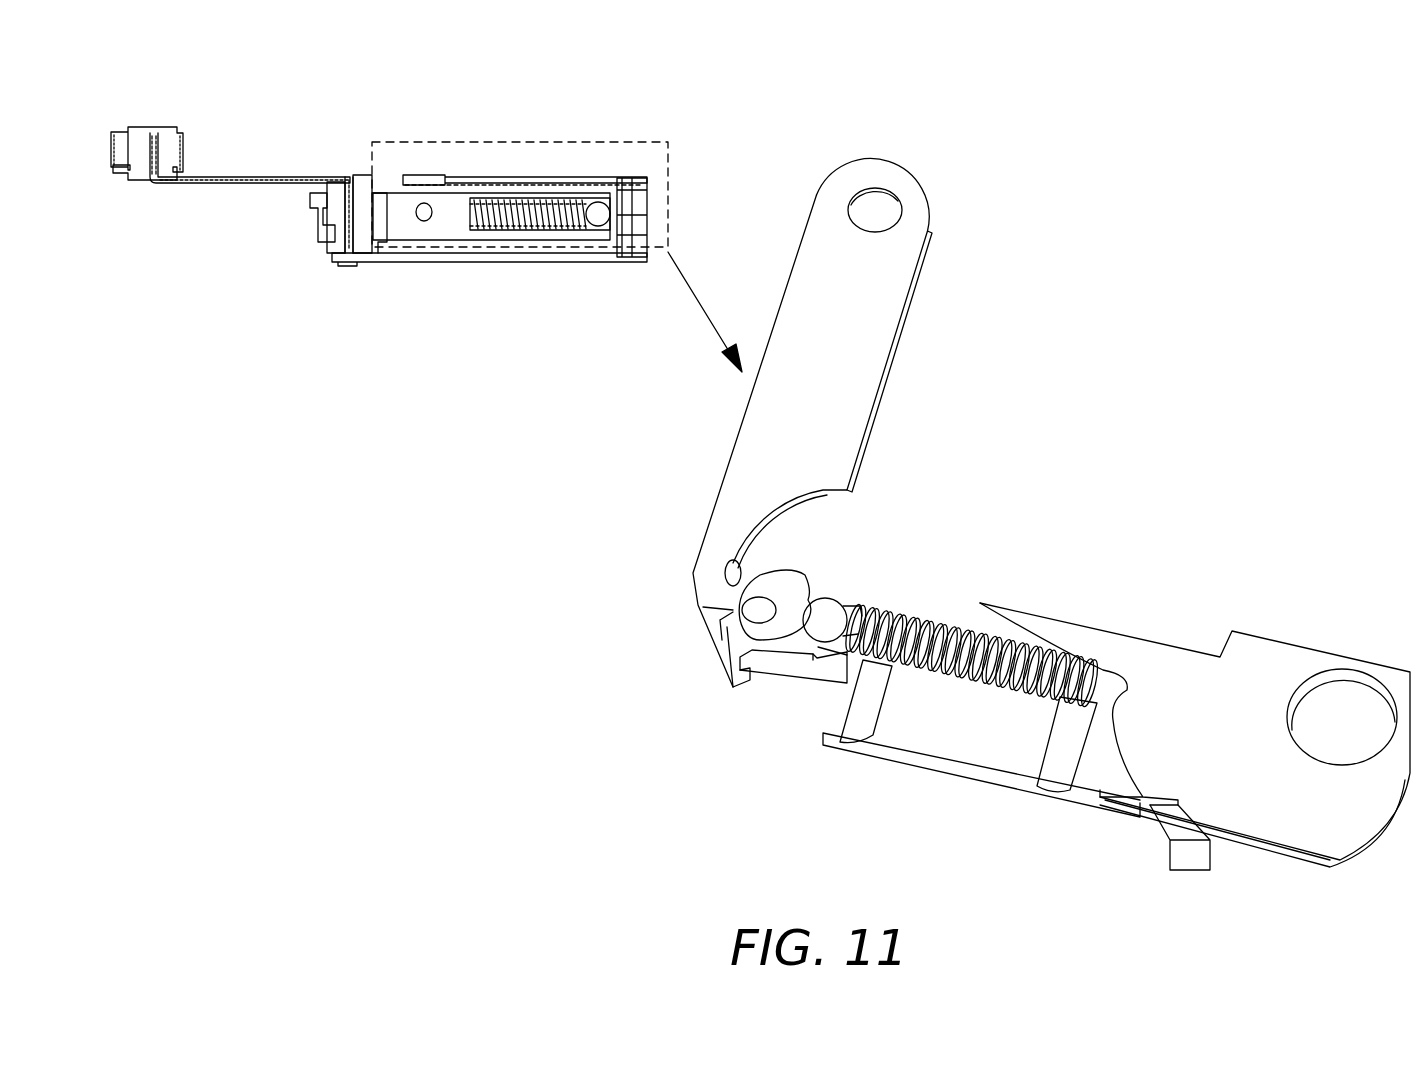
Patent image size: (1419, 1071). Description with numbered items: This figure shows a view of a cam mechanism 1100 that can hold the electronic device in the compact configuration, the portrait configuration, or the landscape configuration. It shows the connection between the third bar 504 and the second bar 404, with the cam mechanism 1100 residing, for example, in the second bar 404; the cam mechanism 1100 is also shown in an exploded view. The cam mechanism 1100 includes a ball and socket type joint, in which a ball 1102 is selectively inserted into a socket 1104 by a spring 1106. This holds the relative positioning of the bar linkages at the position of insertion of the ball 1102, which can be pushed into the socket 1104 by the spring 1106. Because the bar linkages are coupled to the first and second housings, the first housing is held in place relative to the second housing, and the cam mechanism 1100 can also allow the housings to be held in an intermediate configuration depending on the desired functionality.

The third bar 504 is at (200, 215).
The second bar 404 is at (492, 264).
The cam mechanism 1100 is at (1051, 514).
The ball 1102 is at (840, 608).
The socket 1104 is at (803, 580).
The spring 1106 is at (897, 614).